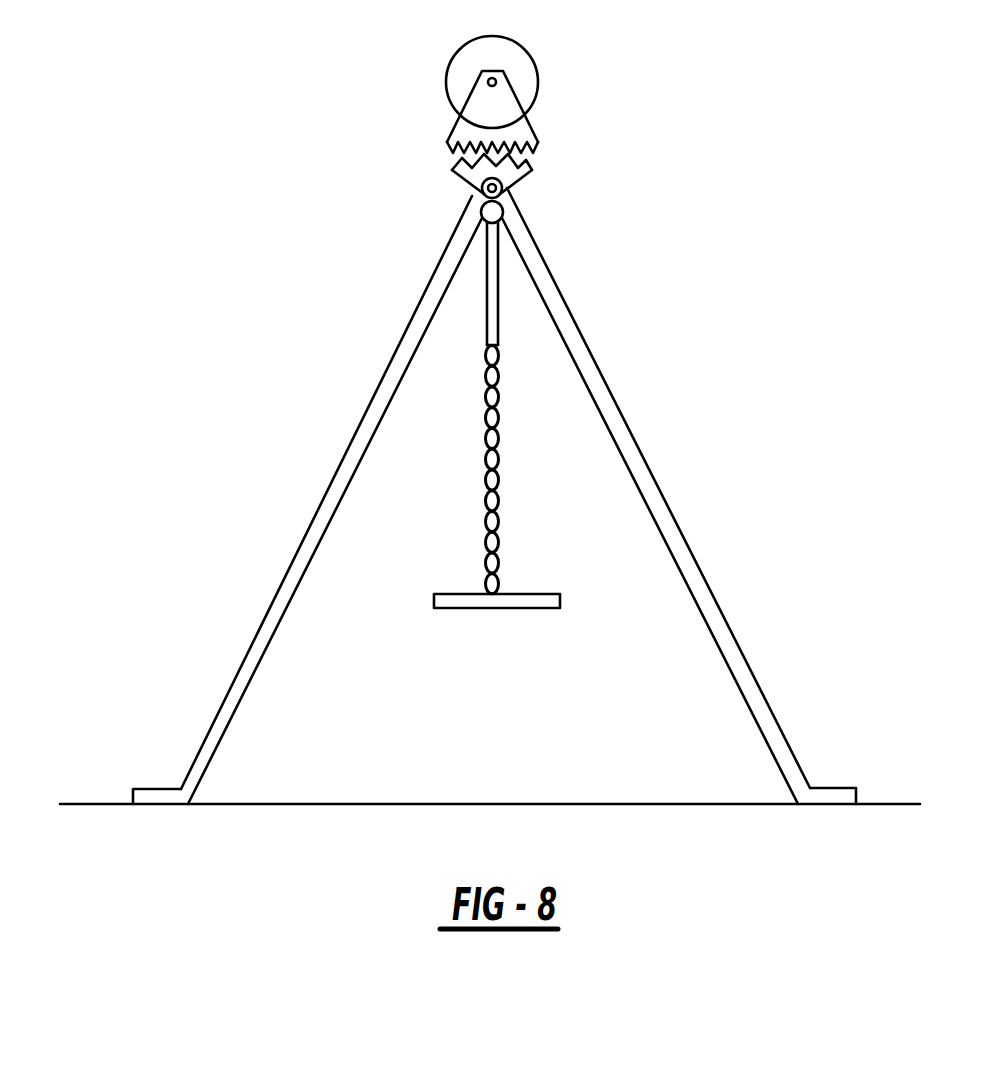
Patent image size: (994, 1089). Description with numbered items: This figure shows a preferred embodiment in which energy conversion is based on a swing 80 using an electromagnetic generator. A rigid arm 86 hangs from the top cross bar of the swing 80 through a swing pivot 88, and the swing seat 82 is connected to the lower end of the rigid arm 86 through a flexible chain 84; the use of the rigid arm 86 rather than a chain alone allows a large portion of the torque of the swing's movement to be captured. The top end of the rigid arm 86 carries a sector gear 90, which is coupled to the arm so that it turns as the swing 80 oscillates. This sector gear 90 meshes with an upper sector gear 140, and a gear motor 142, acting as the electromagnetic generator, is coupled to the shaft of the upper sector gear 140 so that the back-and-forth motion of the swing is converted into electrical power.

The swing 80 is at (737, 531).
The swing seat 82 is at (452, 603).
The flexible chain 84 is at (487, 479).
The rigid arm 86 is at (488, 313).
The swing pivot 88 is at (484, 190).
The sector gear 90 is at (510, 172).
The upper sector gear 140 is at (532, 127).
The gear motor 142 is at (521, 46).